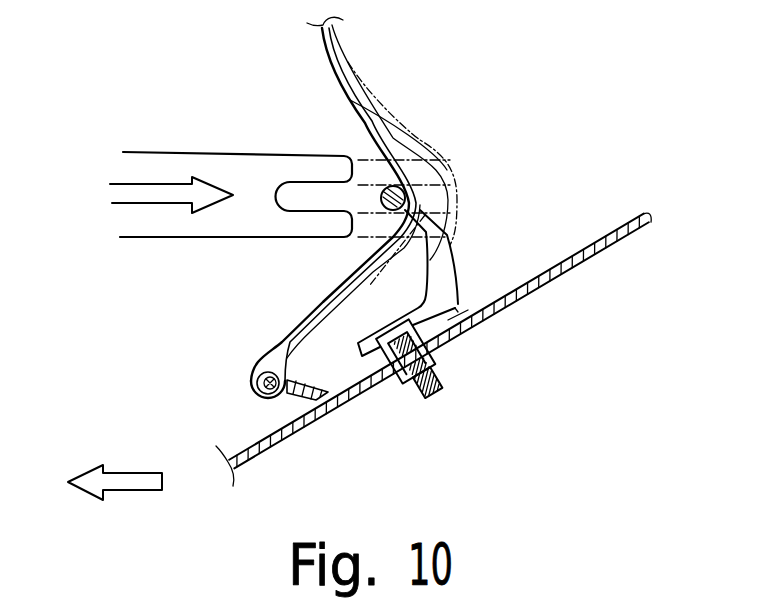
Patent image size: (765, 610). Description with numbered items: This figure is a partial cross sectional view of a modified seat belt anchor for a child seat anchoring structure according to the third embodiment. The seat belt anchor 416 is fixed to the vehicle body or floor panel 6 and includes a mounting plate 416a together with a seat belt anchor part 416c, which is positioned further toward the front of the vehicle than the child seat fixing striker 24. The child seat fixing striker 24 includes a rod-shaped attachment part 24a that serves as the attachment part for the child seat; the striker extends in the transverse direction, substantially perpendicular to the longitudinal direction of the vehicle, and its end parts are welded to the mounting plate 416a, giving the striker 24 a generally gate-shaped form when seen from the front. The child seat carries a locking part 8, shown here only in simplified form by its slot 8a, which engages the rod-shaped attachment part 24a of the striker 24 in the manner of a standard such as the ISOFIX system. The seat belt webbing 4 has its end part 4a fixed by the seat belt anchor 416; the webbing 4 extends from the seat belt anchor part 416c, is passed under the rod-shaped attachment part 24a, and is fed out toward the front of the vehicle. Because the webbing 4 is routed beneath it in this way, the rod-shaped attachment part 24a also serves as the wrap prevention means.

The seat belt webbing 4 is at (357, 115).
The end part of the seat belt webbing 4a is at (250, 373).
The floor panel 6 is at (598, 240).
The locking part 8 is at (207, 140).
The slot 8a is at (320, 212).
The child seat fixing striker 24 is at (448, 271).
The rod-shaped attachment part 24a is at (390, 188).
The seat belt anchor 416 is at (370, 374).
The mounting plate 416a is at (462, 337).
The seat belt anchor part 416c is at (276, 418).